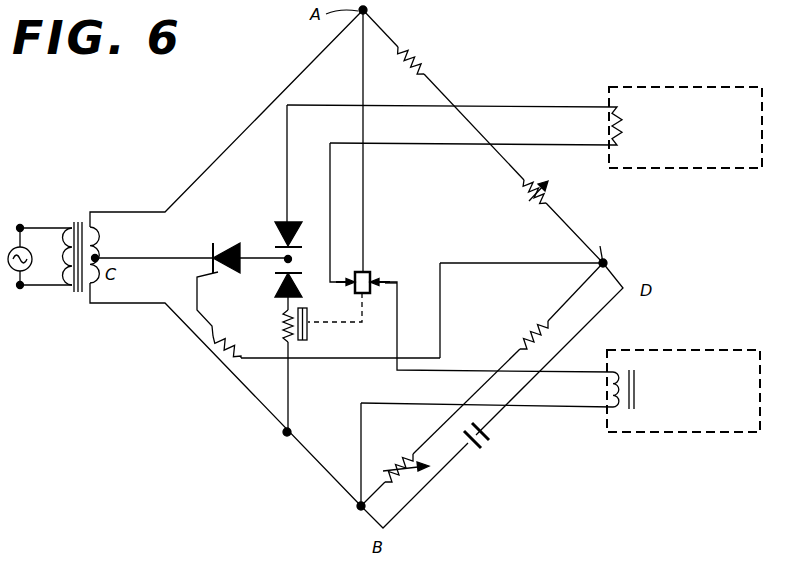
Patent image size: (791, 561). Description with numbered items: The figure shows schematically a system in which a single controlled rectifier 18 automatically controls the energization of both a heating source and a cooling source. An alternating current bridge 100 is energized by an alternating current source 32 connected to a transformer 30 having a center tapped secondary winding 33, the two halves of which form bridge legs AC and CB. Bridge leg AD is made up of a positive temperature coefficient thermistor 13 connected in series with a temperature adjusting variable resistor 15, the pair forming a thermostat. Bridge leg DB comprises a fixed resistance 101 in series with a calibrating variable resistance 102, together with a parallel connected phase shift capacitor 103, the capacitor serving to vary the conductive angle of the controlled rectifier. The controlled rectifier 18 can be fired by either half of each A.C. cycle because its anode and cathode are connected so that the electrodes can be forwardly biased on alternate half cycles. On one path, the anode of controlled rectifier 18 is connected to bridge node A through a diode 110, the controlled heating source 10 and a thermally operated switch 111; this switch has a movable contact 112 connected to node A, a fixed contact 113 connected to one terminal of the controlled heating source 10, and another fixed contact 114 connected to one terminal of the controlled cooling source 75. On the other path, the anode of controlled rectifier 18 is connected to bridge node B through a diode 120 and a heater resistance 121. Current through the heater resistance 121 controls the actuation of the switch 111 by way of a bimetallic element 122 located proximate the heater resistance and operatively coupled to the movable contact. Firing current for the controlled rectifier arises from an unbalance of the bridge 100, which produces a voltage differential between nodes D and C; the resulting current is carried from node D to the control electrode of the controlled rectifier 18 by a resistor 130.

The controlled heating source 10 is at (700, 87).
The positive temperature coefficient thermistor 13 is at (419, 59).
The temperature adjusting variable resistor 15 is at (549, 185).
The controlled rectifier 18 is at (222, 249).
The transformer 30 is at (78, 216).
The alternating current source 32 is at (8, 250).
The center tapped secondary winding 33 is at (93, 243).
The controlled cooling source 75 is at (690, 350).
The alternating current bridge 100 is at (598, 247).
The fixed resistance 101 is at (537, 330).
The calibrating variable resistance 102 is at (400, 470).
The phase shift capacitor 103 is at (481, 449).
The diode 110 is at (282, 221).
The thermally operated switch 111 is at (371, 273).
The movable contact 112 is at (372, 278).
The fixed contact 113 is at (346, 285).
The fixed contact 114 is at (386, 286).
The diode 120 is at (276, 291).
The heater resistance 121 is at (285, 319).
The bimetallic element 122 is at (303, 342).
The resistor 130 is at (213, 345).